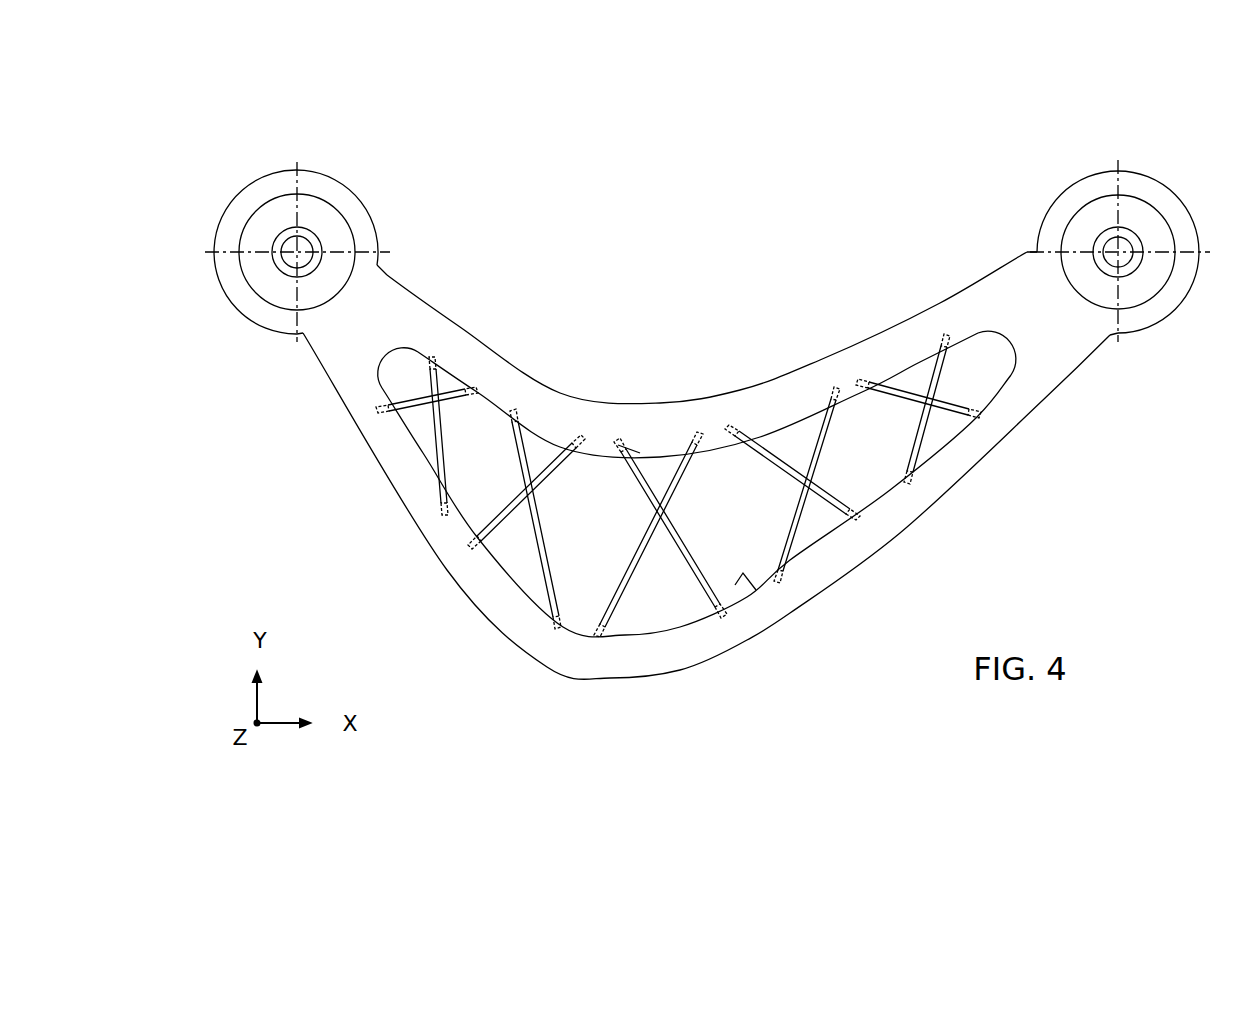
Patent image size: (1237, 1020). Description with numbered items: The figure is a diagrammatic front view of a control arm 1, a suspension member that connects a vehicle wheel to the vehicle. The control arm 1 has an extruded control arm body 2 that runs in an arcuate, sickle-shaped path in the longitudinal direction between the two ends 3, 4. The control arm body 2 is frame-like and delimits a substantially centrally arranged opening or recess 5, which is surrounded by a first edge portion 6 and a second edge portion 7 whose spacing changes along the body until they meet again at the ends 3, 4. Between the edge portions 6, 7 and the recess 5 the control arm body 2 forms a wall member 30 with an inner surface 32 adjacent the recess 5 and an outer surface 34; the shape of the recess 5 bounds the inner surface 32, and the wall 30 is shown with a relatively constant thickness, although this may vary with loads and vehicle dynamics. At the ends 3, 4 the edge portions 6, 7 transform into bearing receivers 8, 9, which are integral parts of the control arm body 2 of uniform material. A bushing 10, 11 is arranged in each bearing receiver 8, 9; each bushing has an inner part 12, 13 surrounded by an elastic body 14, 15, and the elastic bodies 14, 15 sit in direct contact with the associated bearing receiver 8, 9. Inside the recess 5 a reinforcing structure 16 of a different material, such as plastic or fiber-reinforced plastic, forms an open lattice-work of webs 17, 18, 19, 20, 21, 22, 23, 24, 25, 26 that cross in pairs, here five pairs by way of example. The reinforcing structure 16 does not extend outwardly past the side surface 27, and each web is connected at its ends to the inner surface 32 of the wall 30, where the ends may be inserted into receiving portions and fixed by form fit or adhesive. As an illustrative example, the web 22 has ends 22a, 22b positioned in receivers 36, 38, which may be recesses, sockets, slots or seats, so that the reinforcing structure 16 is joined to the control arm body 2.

The control arm 1 is at (740, 278).
The control arm body 2 is at (388, 297).
The end 3 is at (262, 345).
The end 4 is at (1035, 190).
The recess 5 is at (585, 532).
The first edge portion 6 is at (566, 392).
The second edge portion 7 is at (798, 625).
The bearing receiver 8 is at (388, 213).
The bearing receiver 9 is at (1085, 168).
The bushing 10 is at (238, 292).
The bushing 11 is at (1052, 238).
The inner part 12 is at (283, 240).
The inner part 13 is at (1123, 232).
The elastic body 14 is at (325, 215).
The elastic body 15 is at (1133, 292).
The reinforcing structure 16 is at (785, 436).
The web 17 is at (443, 450).
The web 18 is at (415, 405).
The web 19 is at (547, 573).
The web 20 is at (508, 518).
The web 21 is at (618, 600).
The web 22 is at (703, 580).
The end 22a is at (628, 450).
The end 22b is at (729, 622).
The web 23 is at (790, 540).
The web 24 is at (830, 498).
The web 25 is at (947, 410).
The web 26 is at (918, 440).
The side surface 27 is at (1062, 368).
The wall member 30 is at (572, 655).
The inner surface 32 is at (744, 580).
The outer surface 34 is at (798, 367).
The receiver 36 is at (632, 452).
The receiver 38 is at (724, 616).